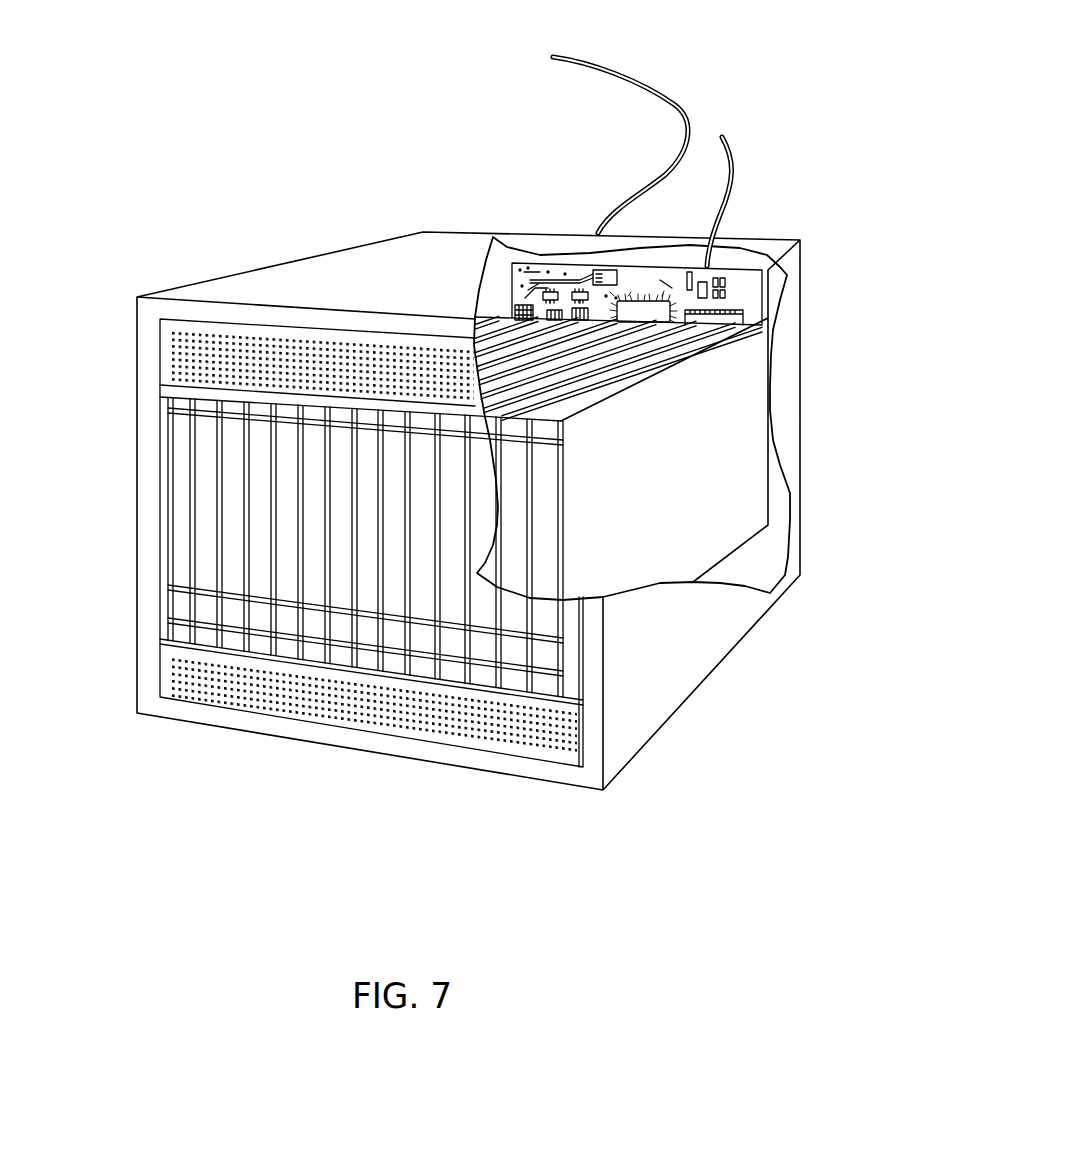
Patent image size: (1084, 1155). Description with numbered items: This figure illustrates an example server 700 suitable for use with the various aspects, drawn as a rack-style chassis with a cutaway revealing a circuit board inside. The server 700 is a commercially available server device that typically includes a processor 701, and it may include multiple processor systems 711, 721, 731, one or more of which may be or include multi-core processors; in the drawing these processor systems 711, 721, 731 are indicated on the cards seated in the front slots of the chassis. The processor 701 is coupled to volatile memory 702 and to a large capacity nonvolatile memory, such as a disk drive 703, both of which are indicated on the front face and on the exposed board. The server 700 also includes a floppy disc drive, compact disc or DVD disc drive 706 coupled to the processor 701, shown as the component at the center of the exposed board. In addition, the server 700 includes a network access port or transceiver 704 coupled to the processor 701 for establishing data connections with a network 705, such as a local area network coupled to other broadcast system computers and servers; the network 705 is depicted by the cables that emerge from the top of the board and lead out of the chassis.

The server 700 is at (340, 250).
The processor 701 is at (515, 310).
The volatile memory 702 is at (735, 323).
The disk drive 703 is at (233, 470).
The network access port or transceiver 704 is at (203, 508).
The network 705 is at (687, 120).
The disc drive 706 is at (643, 313).
The processor system 711 is at (247, 537).
The processor system 721 is at (347, 545).
The processor system 731 is at (452, 550).